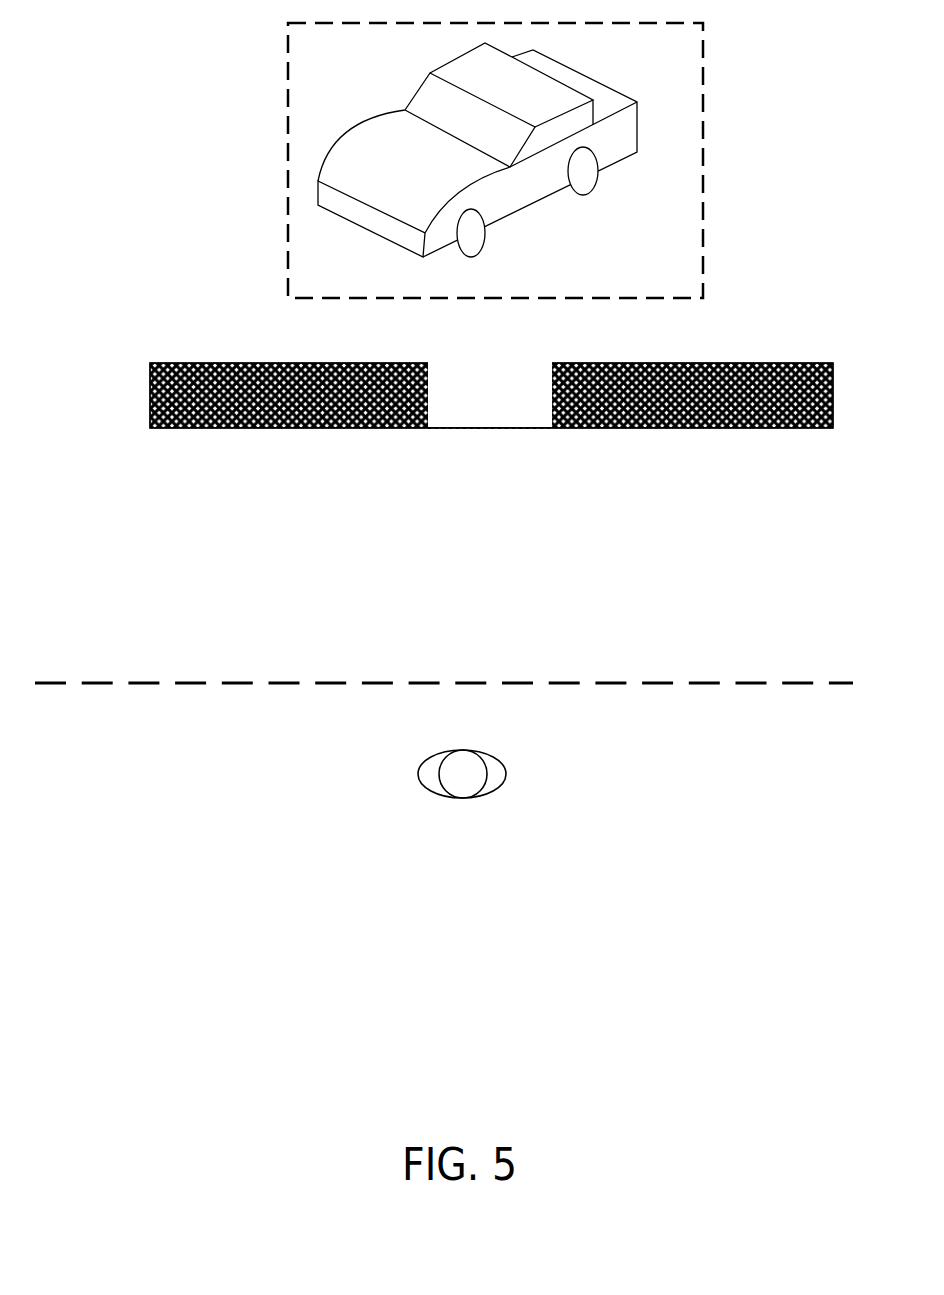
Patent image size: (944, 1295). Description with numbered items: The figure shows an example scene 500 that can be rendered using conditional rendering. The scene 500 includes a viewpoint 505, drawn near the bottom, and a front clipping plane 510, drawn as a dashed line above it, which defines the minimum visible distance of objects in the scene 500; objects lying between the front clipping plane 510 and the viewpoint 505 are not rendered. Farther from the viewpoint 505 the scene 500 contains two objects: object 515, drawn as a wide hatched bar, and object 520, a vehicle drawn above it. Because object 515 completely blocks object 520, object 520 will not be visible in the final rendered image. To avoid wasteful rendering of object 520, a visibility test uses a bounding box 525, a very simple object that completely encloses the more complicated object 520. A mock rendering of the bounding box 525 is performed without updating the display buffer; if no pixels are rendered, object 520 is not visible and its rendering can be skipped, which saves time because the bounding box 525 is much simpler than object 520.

The scene 500 is at (444, 488).
The viewpoint 505 is at (498, 779).
The front clipping plane 510 is at (268, 683).
The object 515 is at (491, 394).
The object 520 is at (432, 236).
The bounding box 525 is at (495, 160).